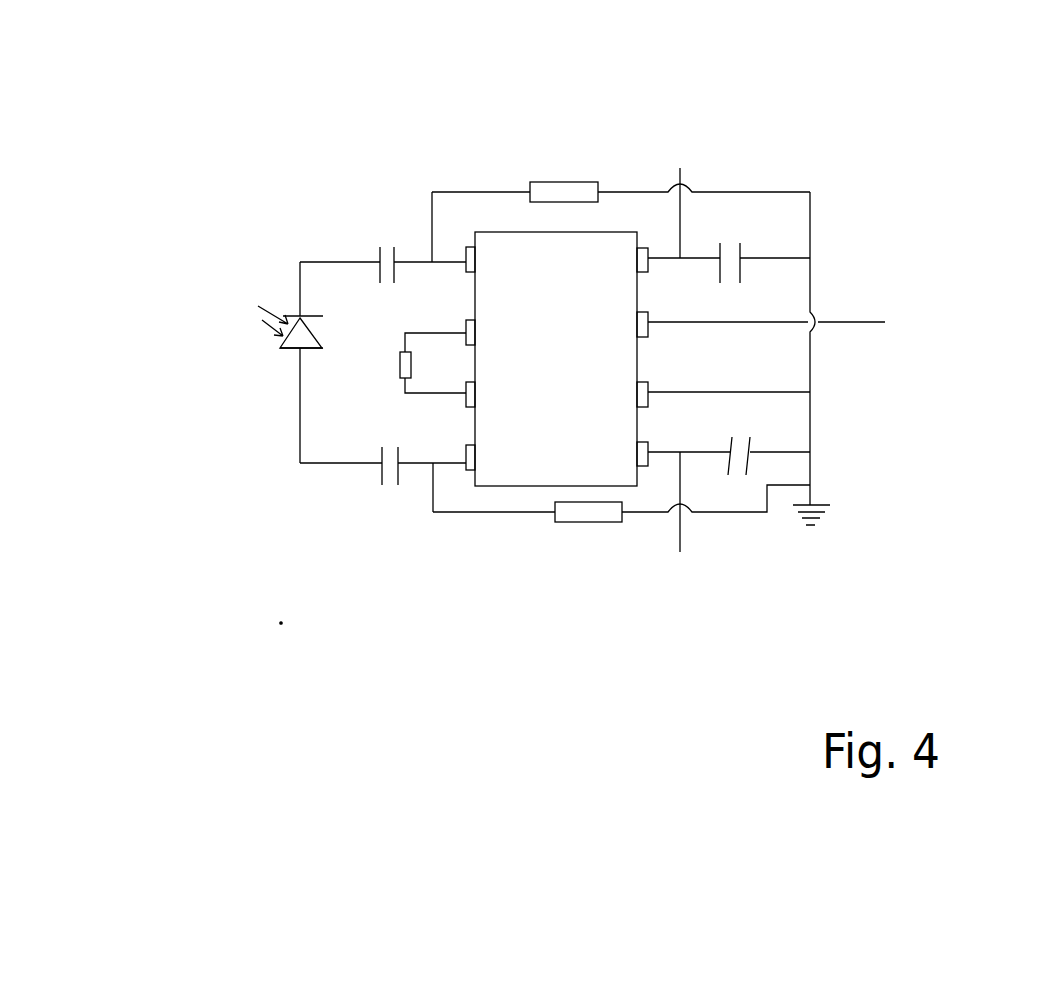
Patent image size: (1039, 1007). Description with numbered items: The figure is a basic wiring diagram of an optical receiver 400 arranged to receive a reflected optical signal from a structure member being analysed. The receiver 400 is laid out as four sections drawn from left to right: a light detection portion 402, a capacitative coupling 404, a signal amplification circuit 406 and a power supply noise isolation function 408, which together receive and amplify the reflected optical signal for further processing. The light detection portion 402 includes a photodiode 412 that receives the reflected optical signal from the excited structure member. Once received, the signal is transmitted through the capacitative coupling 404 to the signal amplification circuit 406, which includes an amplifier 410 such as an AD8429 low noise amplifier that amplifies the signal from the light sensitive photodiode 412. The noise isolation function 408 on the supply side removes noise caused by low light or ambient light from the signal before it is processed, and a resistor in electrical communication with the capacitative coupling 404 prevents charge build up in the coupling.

The optical receiver 400 is at (918, 138).
The light detection portion 402 is at (345, 106).
The capacitative coupling 404 is at (473, 105).
The signal amplification circuit 406 is at (650, 104).
The power supply noise isolation function 408 is at (805, 108).
The amplifier 410 is at (557, 359).
The photodiode 412 is at (272, 350).